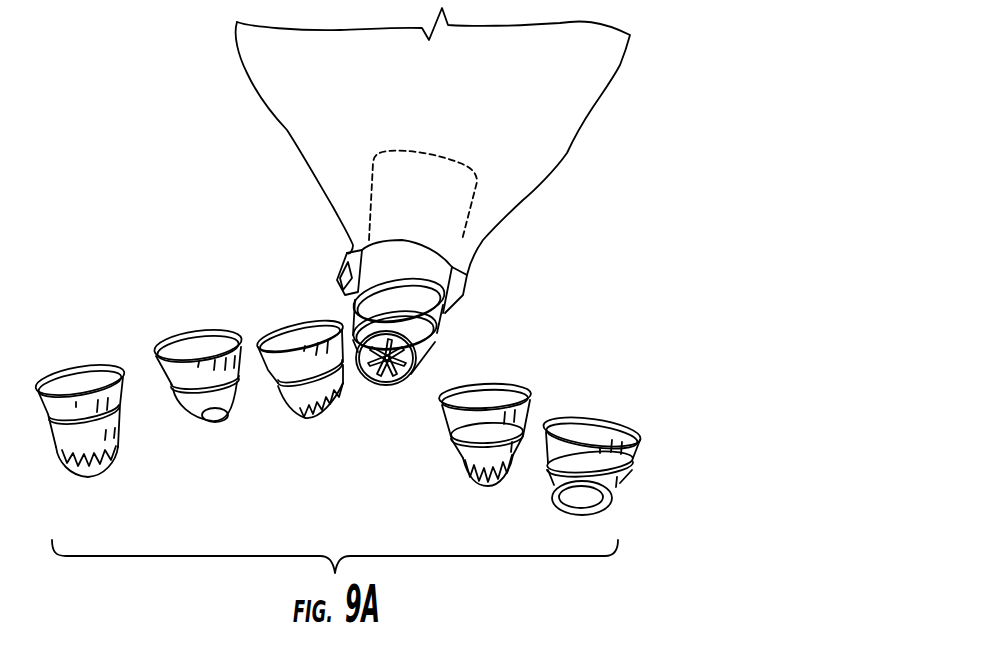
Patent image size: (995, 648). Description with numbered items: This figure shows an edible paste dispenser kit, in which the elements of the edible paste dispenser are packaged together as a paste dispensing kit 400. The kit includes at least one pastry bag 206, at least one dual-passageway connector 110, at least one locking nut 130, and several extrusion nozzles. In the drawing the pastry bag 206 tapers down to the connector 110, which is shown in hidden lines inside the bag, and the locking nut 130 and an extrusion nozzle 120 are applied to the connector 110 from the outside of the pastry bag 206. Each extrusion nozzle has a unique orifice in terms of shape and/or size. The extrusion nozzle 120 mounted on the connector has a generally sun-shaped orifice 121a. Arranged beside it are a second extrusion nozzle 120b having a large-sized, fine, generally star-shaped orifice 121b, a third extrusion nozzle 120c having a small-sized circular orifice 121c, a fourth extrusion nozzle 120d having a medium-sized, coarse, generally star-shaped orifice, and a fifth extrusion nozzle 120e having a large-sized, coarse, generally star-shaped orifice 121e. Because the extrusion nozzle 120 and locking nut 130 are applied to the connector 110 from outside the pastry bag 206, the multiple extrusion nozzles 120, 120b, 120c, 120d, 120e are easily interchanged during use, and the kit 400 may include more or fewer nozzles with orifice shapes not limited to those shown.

The paste dispensing kit 400 is at (150, 173).
The flexible bag 206 is at (548, 130).
The dual-passageway connector 110 is at (442, 202).
The locking nut 130 is at (437, 287).
The extrusion nozzle 120 is at (384, 384).
The second extrusion nozzle 120b is at (70, 384).
The third extrusion nozzle 120c is at (203, 348).
The fourth extrusion nozzle 120d is at (500, 407).
The fifth extrusion nozzle 120e is at (598, 433).
The sun-shaped orifice 121a is at (352, 342).
The star-shaped orifice 121b is at (93, 474).
The circular orifice 121c is at (217, 423).
The star-shaped orifice 121e is at (592, 512).